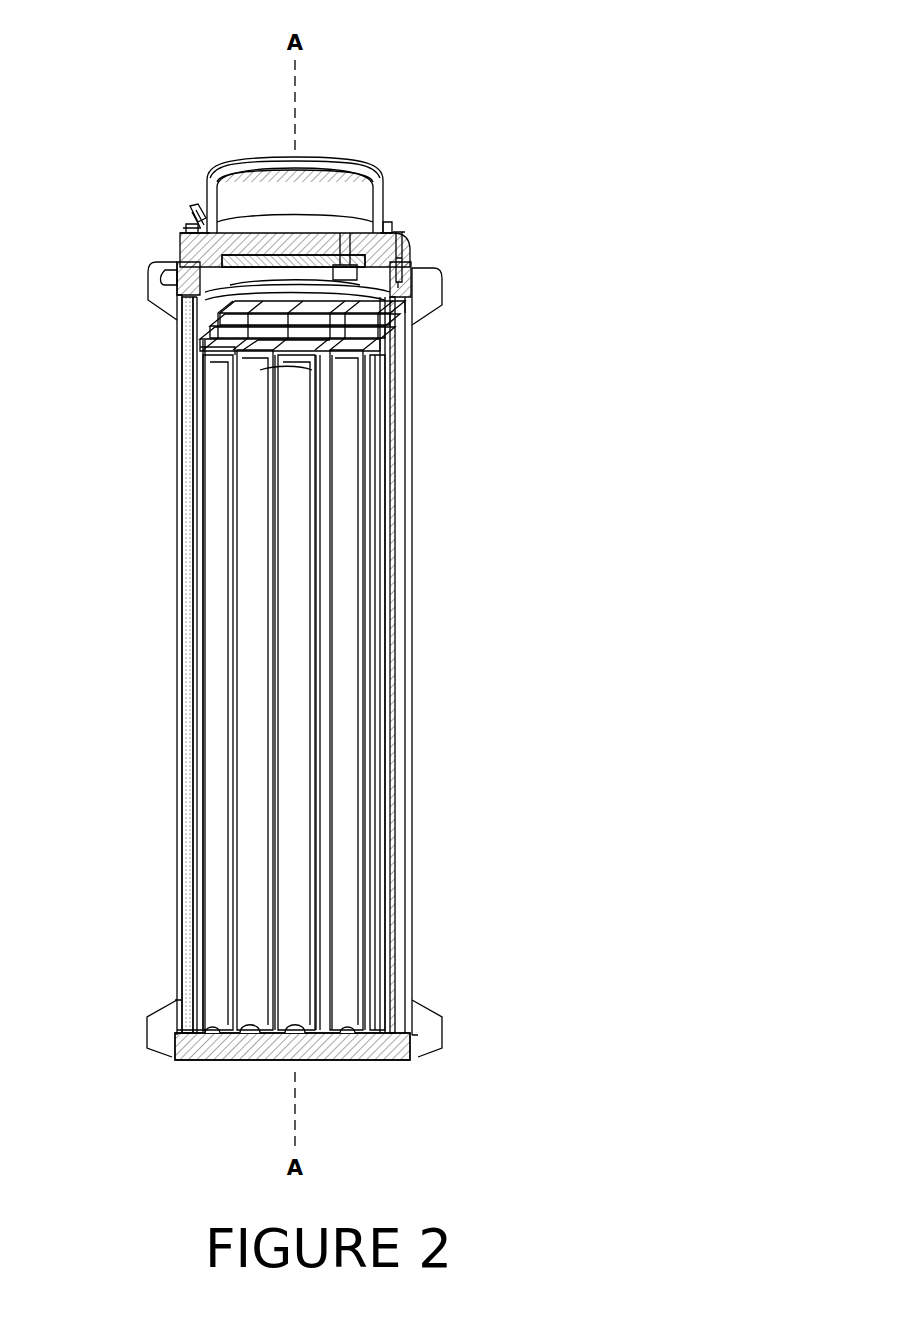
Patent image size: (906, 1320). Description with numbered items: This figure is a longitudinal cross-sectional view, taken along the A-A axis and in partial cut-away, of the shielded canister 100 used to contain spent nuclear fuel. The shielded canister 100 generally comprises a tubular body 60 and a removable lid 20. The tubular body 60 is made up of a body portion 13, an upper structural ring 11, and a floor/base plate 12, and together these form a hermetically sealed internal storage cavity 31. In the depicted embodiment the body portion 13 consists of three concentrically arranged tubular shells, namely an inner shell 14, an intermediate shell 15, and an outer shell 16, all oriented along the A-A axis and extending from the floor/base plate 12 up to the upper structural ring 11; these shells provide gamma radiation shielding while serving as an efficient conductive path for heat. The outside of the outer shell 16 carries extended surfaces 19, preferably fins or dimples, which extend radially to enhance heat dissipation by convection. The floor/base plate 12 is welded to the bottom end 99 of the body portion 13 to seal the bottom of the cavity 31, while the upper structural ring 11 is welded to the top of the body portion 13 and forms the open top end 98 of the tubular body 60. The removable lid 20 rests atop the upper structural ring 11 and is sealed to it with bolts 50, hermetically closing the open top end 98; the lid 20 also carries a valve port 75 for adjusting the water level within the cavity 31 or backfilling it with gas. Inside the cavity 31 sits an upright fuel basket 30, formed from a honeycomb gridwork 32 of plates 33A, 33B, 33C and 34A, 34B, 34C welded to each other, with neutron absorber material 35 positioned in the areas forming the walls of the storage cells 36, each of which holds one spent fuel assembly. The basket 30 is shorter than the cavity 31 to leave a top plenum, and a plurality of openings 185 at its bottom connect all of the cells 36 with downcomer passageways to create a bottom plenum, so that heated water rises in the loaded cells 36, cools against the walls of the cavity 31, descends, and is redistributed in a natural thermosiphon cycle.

The shielded canister 100 is at (435, 100).
The removable lid 20 is at (200, 188).
The valve port 75 is at (182, 216).
The bolts 50 is at (185, 240).
The open top end 98 is at (402, 248).
The upper structural ring 11 is at (405, 272).
The internal storage cavity 31 is at (370, 300).
The plate 33A is at (275, 300).
The plate 33B is at (290, 312).
The plate 33C is at (300, 323).
The plate 34A is at (380, 328).
The plate 34B is at (390, 334).
The plate 34C is at (373, 338).
The honeycomb gridwork 32 is at (200, 347).
The storage cells 36 is at (243, 350).
The body portion 13 is at (398, 568).
The tubular body 60 is at (430, 603).
The inner shell 14 is at (193, 660).
The intermediate shell 15 is at (188, 697).
The outer shell 16 is at (188, 733).
The extended surfaces 19 is at (407, 648).
The fuel basket 30 is at (348, 690).
The neutron absorber material 35 is at (348, 725).
The bottom end 99 is at (187, 1050).
The openings 185 is at (257, 1037).
The floor/base plate 12 is at (388, 1058).